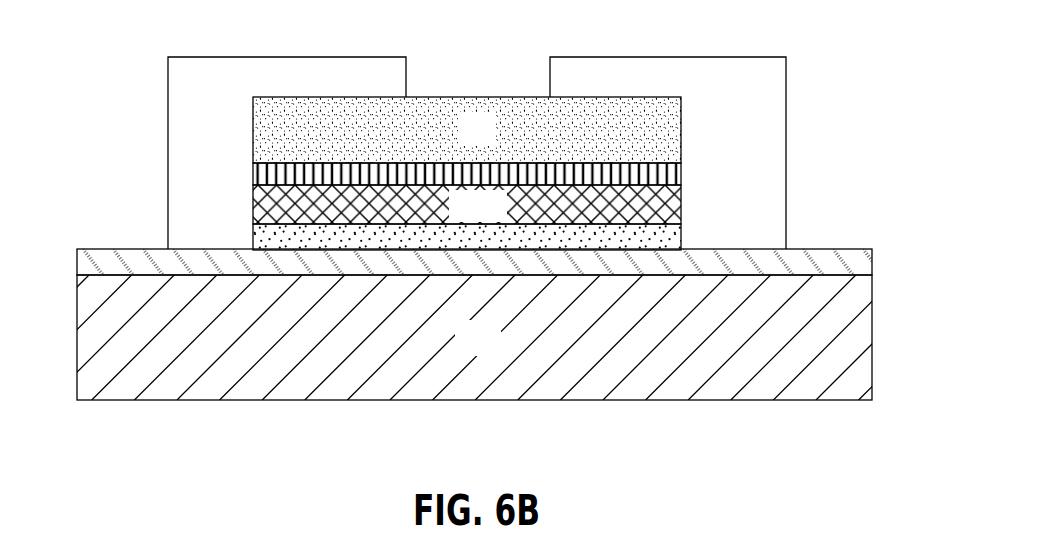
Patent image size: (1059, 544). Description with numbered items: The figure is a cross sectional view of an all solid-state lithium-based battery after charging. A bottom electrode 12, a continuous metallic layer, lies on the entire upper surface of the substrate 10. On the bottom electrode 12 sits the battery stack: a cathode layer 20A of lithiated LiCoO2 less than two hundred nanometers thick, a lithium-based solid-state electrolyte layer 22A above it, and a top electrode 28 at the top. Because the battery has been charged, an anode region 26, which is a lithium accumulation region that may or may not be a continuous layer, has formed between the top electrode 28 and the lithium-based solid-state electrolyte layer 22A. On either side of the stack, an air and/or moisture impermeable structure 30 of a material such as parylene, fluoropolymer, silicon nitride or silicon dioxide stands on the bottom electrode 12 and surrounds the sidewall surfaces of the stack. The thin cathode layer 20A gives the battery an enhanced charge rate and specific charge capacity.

The substrate 10 is at (494, 353).
The bottom electrode 12 is at (120, 258).
The cathode layer 20A is at (667, 236).
The lithium-based solid-state electrolyte layer 22A is at (505, 218).
The anode region 26 is at (667, 173).
The top electrode 28 is at (494, 143).
The air and/or moisture impermeable structure 30 is at (224, 113).